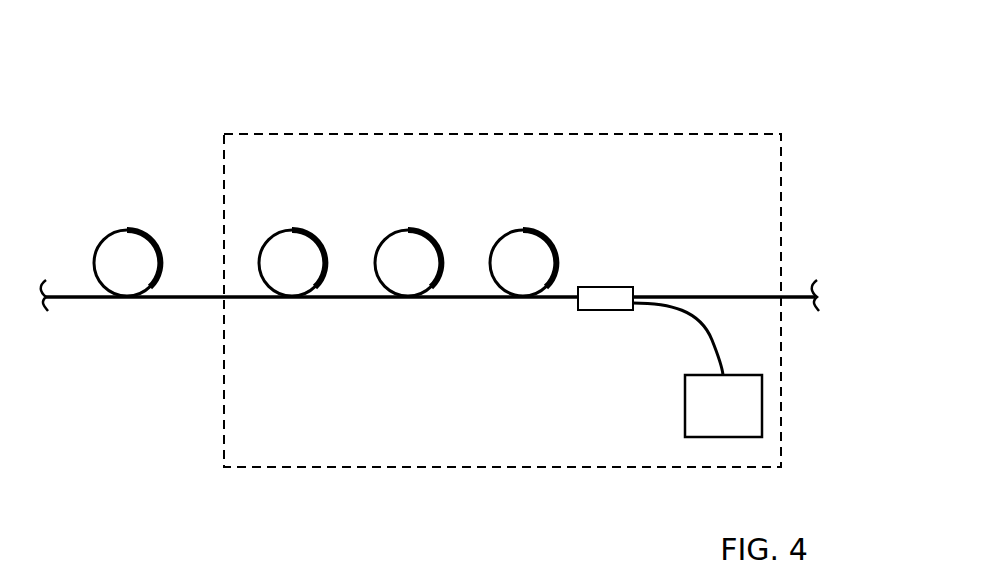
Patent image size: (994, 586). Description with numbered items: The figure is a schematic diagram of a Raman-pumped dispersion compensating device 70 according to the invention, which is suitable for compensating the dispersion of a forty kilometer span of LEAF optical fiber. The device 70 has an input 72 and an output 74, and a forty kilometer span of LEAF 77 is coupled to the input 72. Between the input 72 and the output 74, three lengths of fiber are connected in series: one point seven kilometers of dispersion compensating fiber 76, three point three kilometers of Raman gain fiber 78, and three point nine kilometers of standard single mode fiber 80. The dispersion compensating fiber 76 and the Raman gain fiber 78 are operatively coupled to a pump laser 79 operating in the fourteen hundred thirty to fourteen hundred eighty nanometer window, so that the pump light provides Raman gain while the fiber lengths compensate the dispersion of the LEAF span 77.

The device 70 is at (371, 134).
The input 72 is at (213, 311).
The output 74 is at (793, 320).
The dispersion compensating fiber 76 is at (406, 230).
The 40 km span of LEAF 77 is at (128, 230).
The Raman gain fiber 78 is at (521, 230).
The pump laser 79 is at (670, 362).
The single mode fiber 80 is at (291, 230).